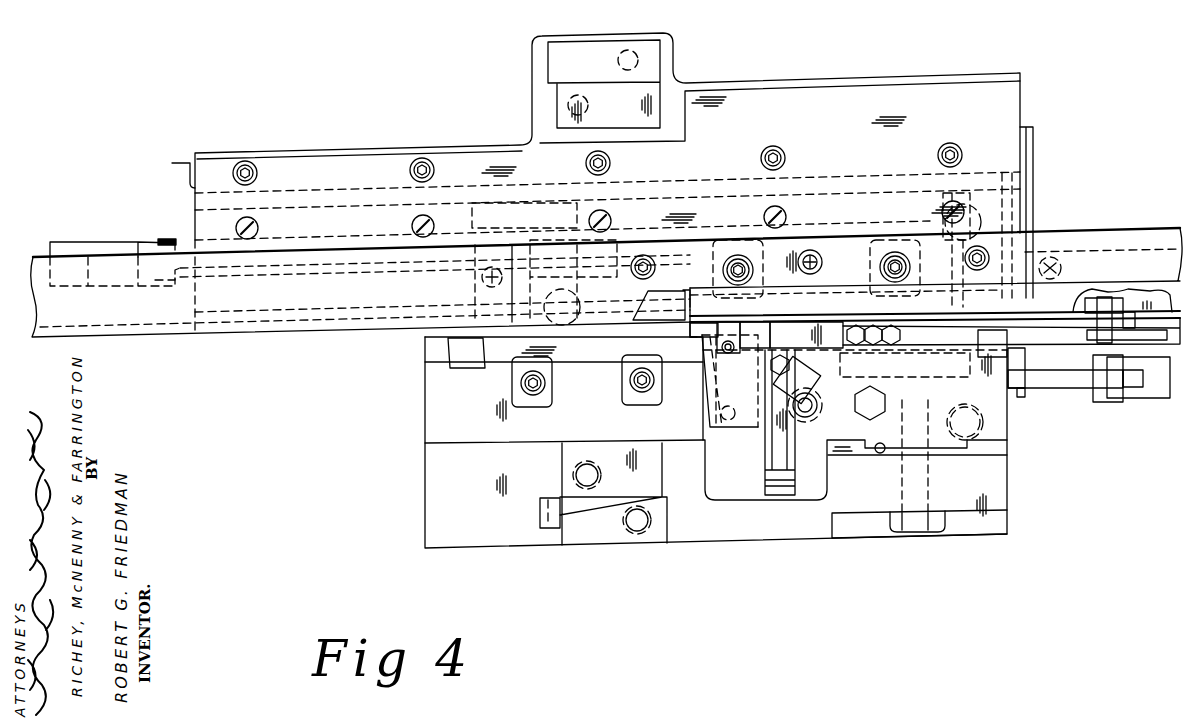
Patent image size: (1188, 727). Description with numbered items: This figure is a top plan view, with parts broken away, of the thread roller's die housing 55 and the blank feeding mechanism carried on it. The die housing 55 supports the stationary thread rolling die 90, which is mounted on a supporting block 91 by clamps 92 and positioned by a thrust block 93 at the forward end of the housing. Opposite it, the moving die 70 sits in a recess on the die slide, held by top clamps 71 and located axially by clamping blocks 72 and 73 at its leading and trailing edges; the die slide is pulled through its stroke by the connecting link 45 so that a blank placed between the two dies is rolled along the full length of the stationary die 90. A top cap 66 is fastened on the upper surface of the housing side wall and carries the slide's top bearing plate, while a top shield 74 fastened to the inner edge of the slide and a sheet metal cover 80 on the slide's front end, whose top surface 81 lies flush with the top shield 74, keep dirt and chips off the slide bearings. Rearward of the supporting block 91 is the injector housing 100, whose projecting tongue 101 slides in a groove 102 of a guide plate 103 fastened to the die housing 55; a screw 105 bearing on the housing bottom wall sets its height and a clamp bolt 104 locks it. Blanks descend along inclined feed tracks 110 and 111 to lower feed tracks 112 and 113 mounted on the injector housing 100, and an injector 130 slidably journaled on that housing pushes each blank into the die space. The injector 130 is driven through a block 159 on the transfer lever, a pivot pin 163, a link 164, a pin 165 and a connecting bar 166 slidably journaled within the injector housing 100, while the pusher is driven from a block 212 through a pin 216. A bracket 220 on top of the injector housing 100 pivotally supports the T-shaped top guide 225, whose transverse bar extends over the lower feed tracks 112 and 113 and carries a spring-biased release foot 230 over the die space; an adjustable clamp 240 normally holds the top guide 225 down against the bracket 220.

The connecting link 45 is at (158, 240).
The die housing 55 is at (712, 548).
The top cap 66 is at (602, 181).
The moving die 70 is at (816, 266).
The top clamps 71 is at (757, 293).
The clamping block 72 is at (668, 298).
The clamping block 73 is at (943, 295).
The top shield 74 is at (1116, 232).
The sheet metal cover 80 is at (133, 338).
The top surface 81 is at (34, 258).
The stationary thread rolling die 90 is at (572, 360).
The supporting block 91 is at (610, 403).
The clamps 92 is at (645, 402).
The thrust block 93 is at (468, 366).
The injector housing 100 is at (1000, 435).
The projecting tongue 101 is at (948, 448).
The groove 102 is at (880, 453).
The guide plate 103 is at (855, 456).
The clamp bolt 104 is at (920, 534).
The screw 105 is at (882, 403).
The feed track 110 is at (1168, 350).
The feed track 111 is at (1165, 312).
The lower feed track 112 is at (950, 345).
The lower feed track 113 is at (922, 326).
The injector 130 is at (712, 392).
The block 159 is at (1146, 396).
The pivot pin 163 is at (1108, 402).
The link 164 is at (1062, 385).
The pin 165 is at (1022, 396).
The connecting bar 166 is at (1035, 372).
The block 212 is at (1130, 298).
The pin 216 is at (1098, 290).
The bracket 220 is at (765, 443).
The top guide 225 is at (772, 370).
The release foot 230 is at (700, 340).
The adjustable clamp 240 is at (806, 418).